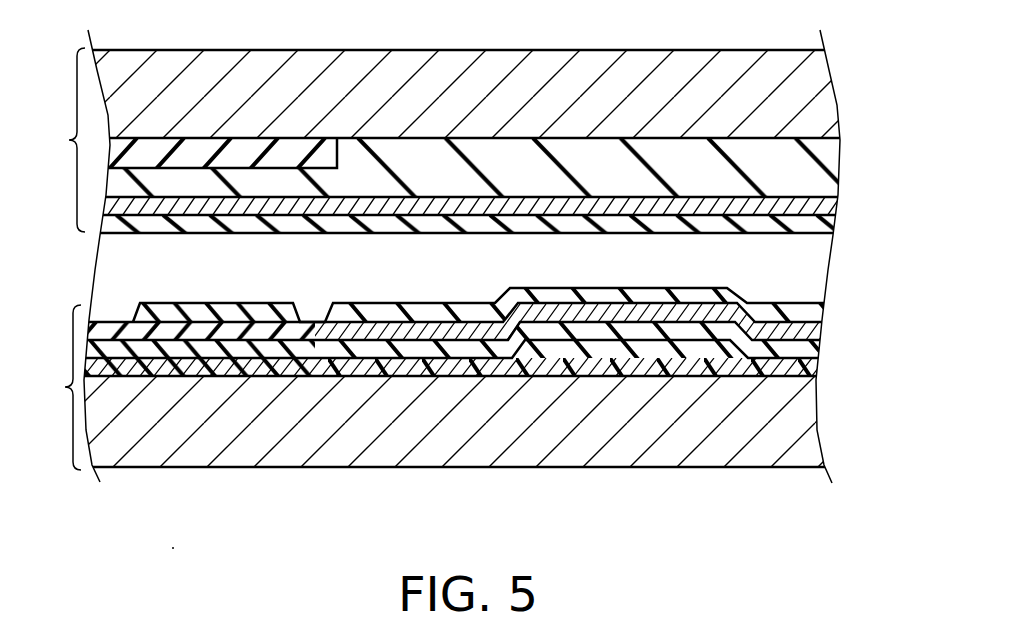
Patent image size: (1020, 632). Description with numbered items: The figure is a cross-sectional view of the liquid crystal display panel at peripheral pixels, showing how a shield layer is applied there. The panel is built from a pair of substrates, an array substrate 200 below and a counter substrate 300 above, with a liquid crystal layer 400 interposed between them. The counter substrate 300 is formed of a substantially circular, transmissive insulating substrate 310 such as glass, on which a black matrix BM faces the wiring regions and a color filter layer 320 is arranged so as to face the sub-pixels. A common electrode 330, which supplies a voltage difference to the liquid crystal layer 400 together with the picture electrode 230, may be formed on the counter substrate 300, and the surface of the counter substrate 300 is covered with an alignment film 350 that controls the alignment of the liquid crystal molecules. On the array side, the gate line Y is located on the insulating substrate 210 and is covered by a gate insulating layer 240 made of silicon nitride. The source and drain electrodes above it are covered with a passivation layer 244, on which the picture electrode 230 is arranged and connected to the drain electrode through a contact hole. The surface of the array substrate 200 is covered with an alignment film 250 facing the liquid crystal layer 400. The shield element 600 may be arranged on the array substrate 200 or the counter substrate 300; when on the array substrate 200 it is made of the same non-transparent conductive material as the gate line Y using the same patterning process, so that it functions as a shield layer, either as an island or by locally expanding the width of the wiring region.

The counter substrate 300 is at (431, 132).
The insulating substrate 310 is at (828, 95).
The color filter layer 320 is at (830, 172).
The black matrix BM is at (277, 157).
The common electrode 330 is at (829, 208).
The alignment film 350 is at (832, 232).
The liquid crystal layer 400 is at (815, 272).
The array substrate 200 is at (426, 393).
The alignment film 250 is at (824, 313).
The picture electrode 230 is at (812, 330).
The passivation layer 244 is at (815, 350).
The gate insulating layer 240 is at (818, 368).
The insulating substrate 210 is at (815, 428).
The gate line Y is at (212, 366).
The shield element 600 is at (630, 374).